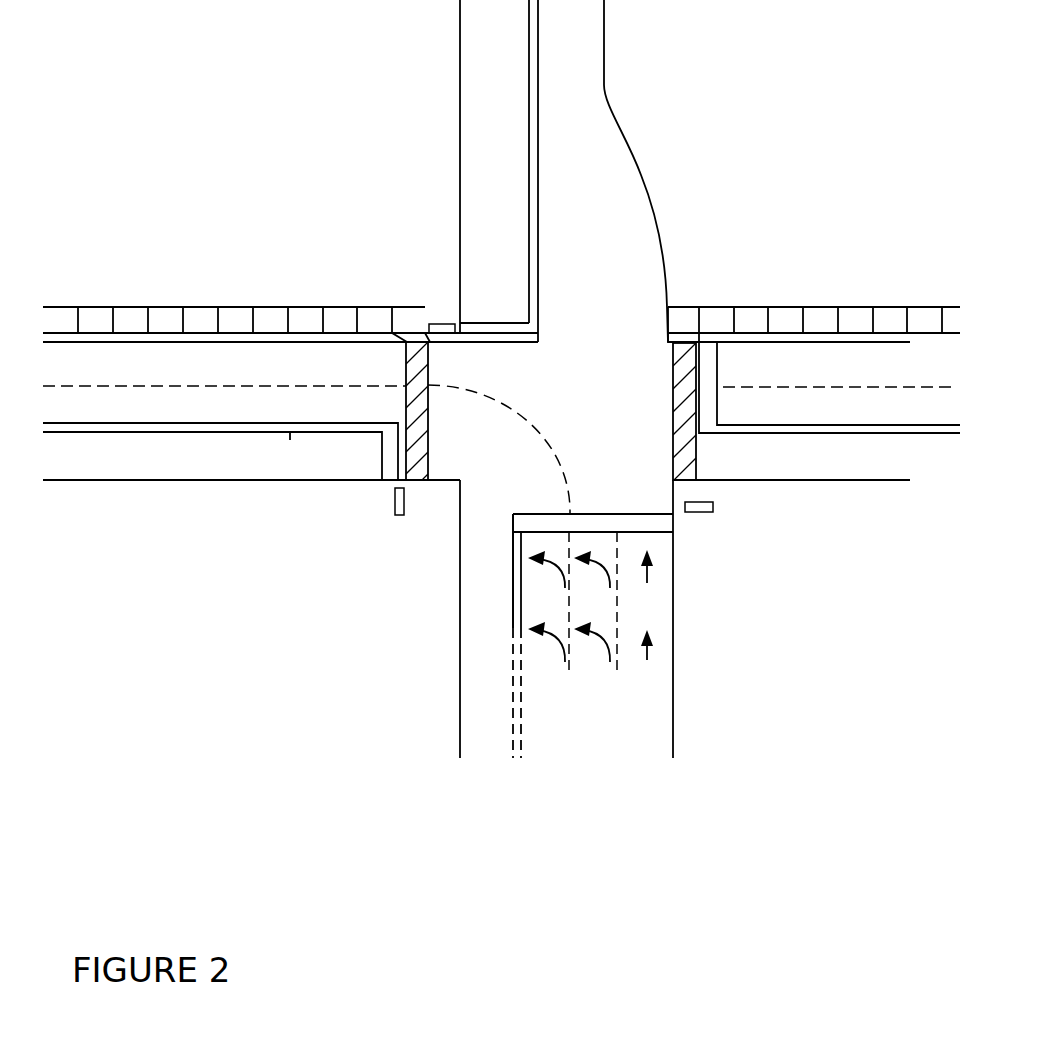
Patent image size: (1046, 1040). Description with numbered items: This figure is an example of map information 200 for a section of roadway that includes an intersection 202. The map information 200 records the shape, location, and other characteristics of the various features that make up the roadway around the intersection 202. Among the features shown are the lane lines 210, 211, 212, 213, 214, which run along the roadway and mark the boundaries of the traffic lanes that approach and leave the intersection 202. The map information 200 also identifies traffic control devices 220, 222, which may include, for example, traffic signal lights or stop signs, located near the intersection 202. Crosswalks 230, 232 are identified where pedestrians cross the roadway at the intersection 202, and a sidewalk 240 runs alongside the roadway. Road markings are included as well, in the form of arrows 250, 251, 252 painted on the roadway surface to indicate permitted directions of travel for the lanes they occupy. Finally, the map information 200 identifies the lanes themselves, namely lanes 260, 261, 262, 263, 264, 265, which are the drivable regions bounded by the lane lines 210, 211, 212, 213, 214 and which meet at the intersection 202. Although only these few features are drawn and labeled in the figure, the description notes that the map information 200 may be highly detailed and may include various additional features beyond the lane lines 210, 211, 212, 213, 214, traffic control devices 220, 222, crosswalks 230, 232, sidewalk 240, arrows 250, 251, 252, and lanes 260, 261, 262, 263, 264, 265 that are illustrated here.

The map information 200 is at (167, 929).
The intersection 202 is at (506, 449).
The lane line 210 is at (198, 383).
The lane line 211 is at (270, 423).
The lane line 212 is at (512, 745).
The lane line 213 is at (530, 139).
The lane line 214 is at (805, 422).
The traffic control device 220 is at (715, 510).
The traffic control device 222 is at (443, 323).
The crosswalk 230 is at (405, 377).
The crosswalk 232 is at (699, 337).
The sidewalk 240 is at (789, 305).
The arrow 250 is at (513, 628).
The arrow 251 is at (600, 640).
The arrow 252 is at (650, 652).
The lane 260 is at (548, 601).
The lane 261 is at (595, 601).
The lane 262 is at (647, 584).
The lane 263 is at (251, 463).
The lane 264 is at (224, 405).
The lane 265 is at (224, 359).